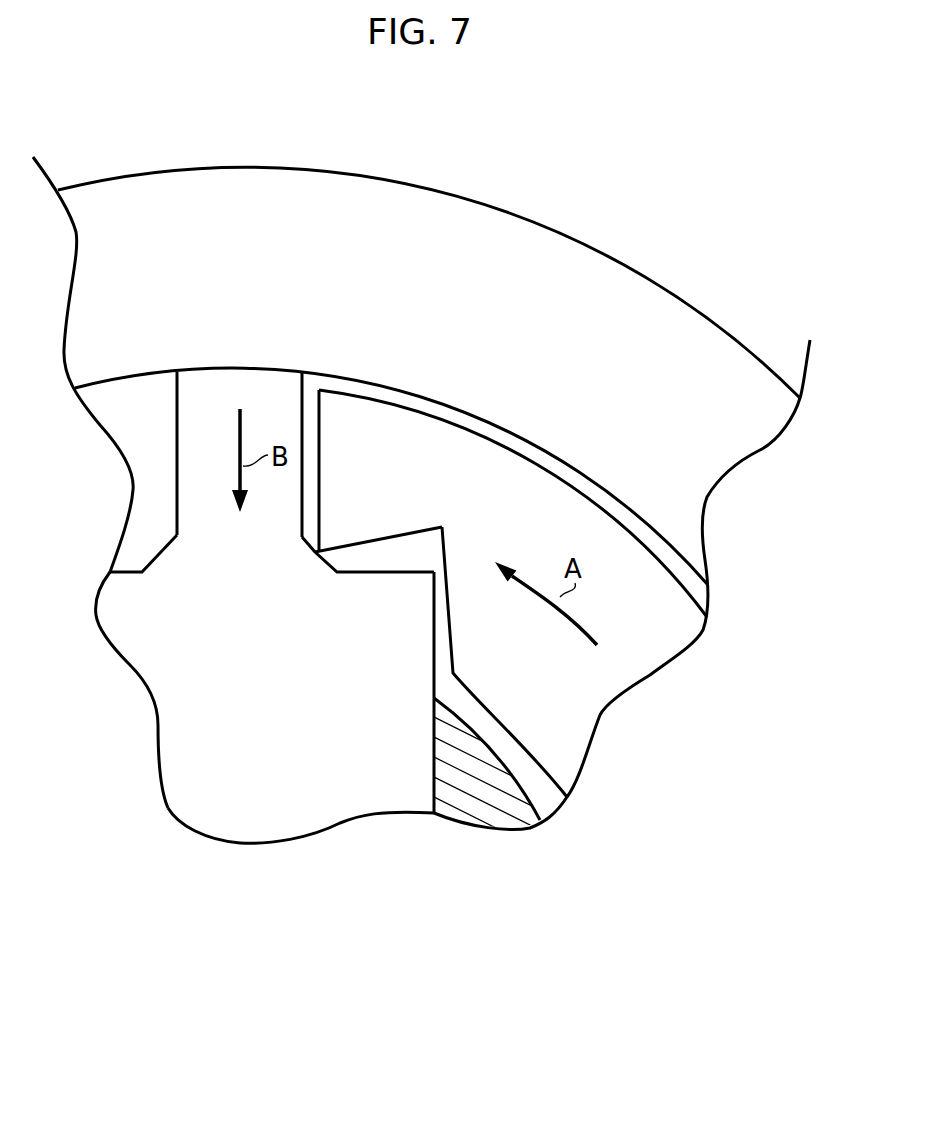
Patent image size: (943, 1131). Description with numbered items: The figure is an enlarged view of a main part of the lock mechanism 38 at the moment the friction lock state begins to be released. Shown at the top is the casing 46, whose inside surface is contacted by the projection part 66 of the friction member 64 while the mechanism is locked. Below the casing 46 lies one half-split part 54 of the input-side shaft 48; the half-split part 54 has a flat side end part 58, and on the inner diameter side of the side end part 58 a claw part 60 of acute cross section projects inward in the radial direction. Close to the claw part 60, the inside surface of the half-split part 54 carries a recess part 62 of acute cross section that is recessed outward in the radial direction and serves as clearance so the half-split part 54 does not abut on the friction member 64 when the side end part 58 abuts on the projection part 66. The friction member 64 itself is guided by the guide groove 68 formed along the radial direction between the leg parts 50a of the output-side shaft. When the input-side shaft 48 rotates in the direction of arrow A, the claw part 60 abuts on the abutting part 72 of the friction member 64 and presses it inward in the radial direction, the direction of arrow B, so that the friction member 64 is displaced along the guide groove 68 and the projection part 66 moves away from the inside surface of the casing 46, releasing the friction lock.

The lock mechanism 38 is at (242, 857).
The casing 46 is at (555, 228).
The input-side shaft 48 is at (623, 703).
The leg part 50a is at (487, 815).
The half-split part 54 is at (650, 643).
The side end part 58 is at (316, 423).
The claw part 60 is at (315, 552).
The recess part 62 is at (436, 528).
The friction member 64 is at (213, 750).
The projection part 66 is at (238, 372).
The guide groove 68 is at (434, 770).
The abutting part 72 is at (155, 553).